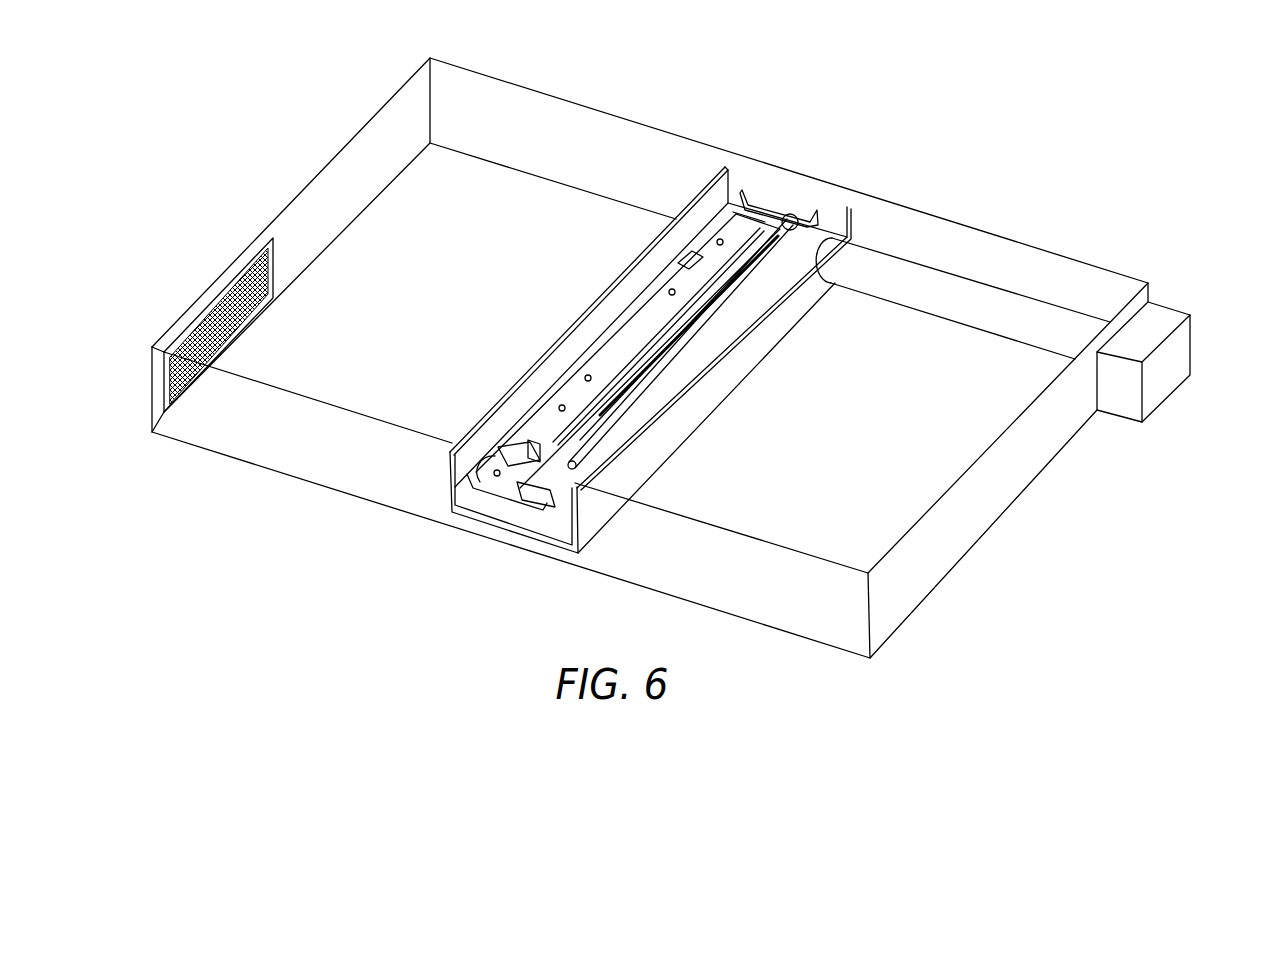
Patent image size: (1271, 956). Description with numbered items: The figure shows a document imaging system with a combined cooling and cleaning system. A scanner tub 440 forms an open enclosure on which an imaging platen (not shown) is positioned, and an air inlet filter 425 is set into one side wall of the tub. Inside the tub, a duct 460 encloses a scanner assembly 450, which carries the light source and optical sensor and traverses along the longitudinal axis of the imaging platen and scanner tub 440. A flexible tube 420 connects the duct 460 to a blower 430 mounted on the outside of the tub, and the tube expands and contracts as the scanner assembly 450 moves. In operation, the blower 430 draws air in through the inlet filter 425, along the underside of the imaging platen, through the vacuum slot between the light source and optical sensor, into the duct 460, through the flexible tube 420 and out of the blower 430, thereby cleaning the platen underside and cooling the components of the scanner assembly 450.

The flexible tube 420 is at (890, 290).
The air inlet filter 425 is at (273, 272).
The blower 430 is at (1152, 412).
The scanner tub 440 is at (313, 487).
The scanner assembly 450 is at (777, 217).
The duct 460 is at (550, 347).